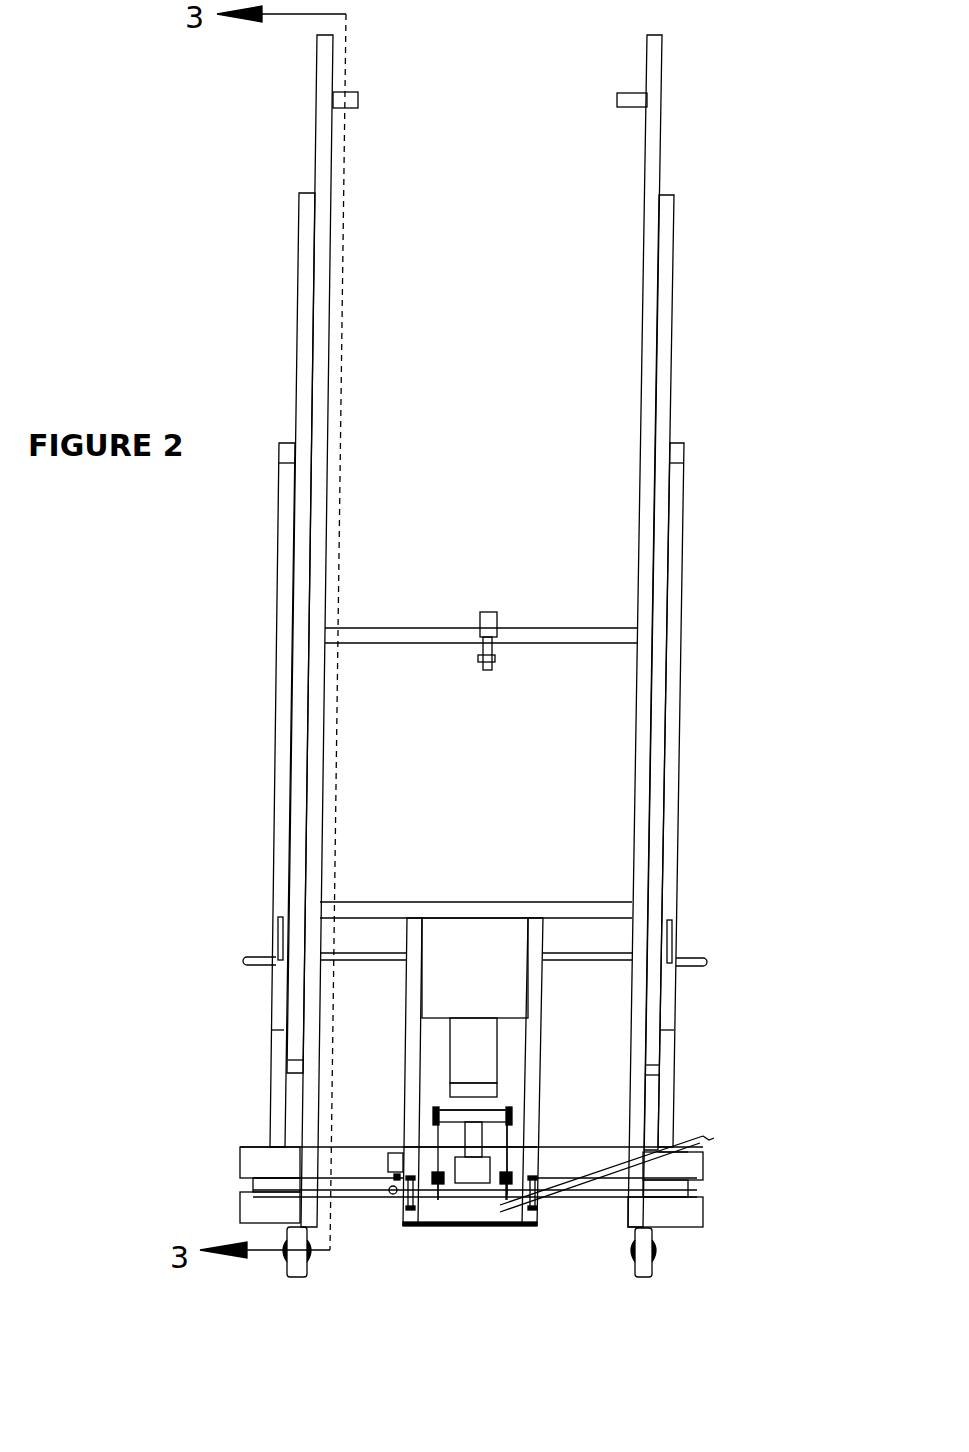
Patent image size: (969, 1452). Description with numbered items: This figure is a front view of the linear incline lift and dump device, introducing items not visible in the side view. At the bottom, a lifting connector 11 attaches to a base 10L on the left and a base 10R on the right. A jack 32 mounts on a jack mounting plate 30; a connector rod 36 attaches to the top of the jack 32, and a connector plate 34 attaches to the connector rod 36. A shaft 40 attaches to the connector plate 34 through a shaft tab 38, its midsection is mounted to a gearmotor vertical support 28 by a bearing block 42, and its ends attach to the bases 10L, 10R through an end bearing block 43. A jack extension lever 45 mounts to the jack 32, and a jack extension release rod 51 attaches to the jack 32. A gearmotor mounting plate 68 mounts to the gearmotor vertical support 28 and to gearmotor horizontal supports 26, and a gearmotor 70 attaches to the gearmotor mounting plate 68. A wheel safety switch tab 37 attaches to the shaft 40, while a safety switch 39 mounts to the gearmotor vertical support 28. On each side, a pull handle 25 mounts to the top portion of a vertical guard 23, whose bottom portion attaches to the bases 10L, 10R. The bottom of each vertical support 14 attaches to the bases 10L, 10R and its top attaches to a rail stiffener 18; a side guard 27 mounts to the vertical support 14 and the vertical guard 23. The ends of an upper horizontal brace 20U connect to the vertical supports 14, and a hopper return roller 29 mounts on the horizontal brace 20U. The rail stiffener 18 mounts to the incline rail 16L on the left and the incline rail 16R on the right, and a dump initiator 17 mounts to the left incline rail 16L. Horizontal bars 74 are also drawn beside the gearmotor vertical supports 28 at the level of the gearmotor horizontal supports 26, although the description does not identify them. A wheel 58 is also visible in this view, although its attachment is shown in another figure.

The base (left) 10L is at (250, 1200).
The base (right) 10R is at (688, 1217).
The lifting connector 11 is at (582, 1162).
The vertical support 14 is at (279, 568).
The incline rail (left) 16L is at (322, 130).
The incline rail (right) 16R is at (655, 134).
The dump initiator 17 is at (617, 100).
The rail stiffener 18 is at (300, 272).
The horizontal brace (upper) 20U is at (400, 641).
The vertical guard 23 is at (280, 1068).
The pull handle 25 is at (280, 917).
The gearmotor horizontal supports 26 is at (497, 902).
The side guard 27 is at (248, 958).
The gearmotor vertical support 28 is at (540, 922).
The hopper return roller 29 is at (490, 622).
The jack mounting plate 30 is at (505, 1226).
The jack 32 is at (473, 1180).
The connector plate 34 is at (510, 1132).
The connector rod 36 is at (455, 1113).
The wheel safety switch tab 37 is at (394, 1196).
The shaft tab 38 is at (508, 1176).
The safety switch 39 is at (395, 1153).
The shaft 40 is at (353, 1198).
The bearing block 42 is at (412, 1206).
The end bearing block 43 is at (287, 1187).
The jack extension lever 45 is at (708, 1137).
The jack extension release rod 51 is at (682, 1152).
The wheel 58 is at (297, 1242).
The gearmotor mounting plate 68 is at (498, 989).
The gearmotor 70 is at (482, 1043).
The tie bar 74 is at (372, 953).